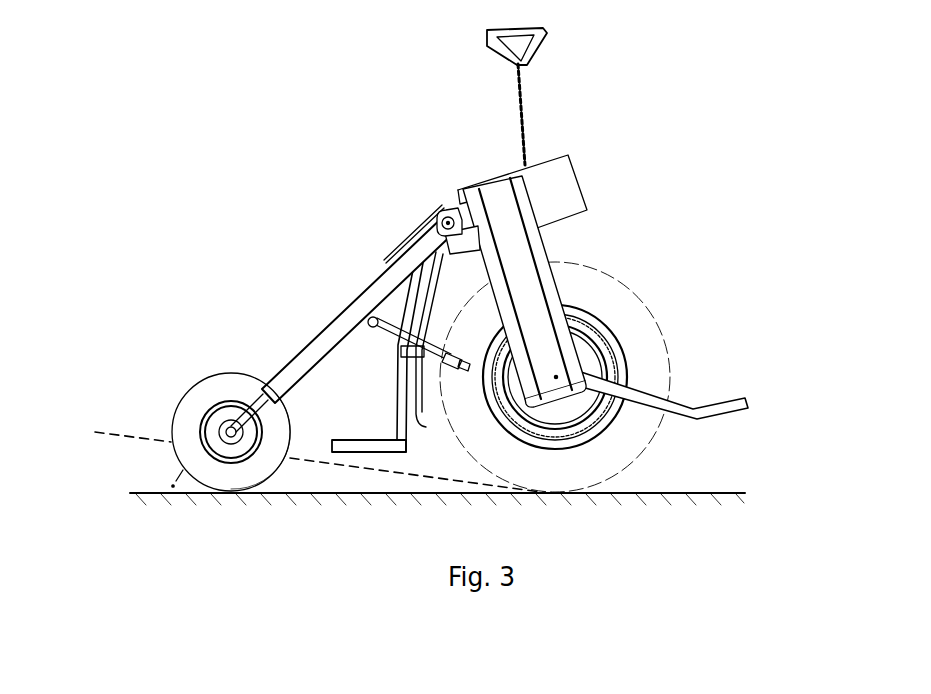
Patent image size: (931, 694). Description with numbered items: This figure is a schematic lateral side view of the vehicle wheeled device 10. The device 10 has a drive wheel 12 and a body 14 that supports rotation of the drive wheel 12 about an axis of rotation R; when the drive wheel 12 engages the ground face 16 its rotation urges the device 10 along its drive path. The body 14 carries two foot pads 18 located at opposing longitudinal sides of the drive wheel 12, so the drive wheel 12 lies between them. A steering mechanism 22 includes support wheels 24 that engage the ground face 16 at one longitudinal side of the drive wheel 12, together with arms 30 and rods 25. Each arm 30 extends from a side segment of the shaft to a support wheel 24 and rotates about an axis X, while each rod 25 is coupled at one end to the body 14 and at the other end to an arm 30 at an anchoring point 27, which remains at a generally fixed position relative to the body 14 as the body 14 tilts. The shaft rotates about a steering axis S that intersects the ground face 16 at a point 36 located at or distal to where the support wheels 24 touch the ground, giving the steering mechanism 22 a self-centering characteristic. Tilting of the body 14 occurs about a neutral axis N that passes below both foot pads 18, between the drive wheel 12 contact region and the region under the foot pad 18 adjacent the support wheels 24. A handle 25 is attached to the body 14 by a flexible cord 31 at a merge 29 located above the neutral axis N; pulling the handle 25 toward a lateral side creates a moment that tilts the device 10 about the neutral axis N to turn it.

The vehicle wheeled device 10 is at (222, 129).
The drive wheel 12 is at (624, 420).
The body 14 is at (597, 207).
The ground face 16 is at (731, 493).
The foot pads 18 is at (370, 444).
The steering mechanism 22 is at (304, 293).
The support wheels 24 is at (192, 417).
The handle 25 is at (542, 52).
The anchoring point 27 is at (370, 316).
The merge 29 is at (524, 168).
The arm 30 is at (393, 270).
The flexible cord 31 is at (518, 108).
The point 36 is at (165, 492).
The neutral axis N is at (110, 430).
The steering axis S is at (182, 474).
The axis X is at (448, 212).
The axis of rotation R is at (554, 370).